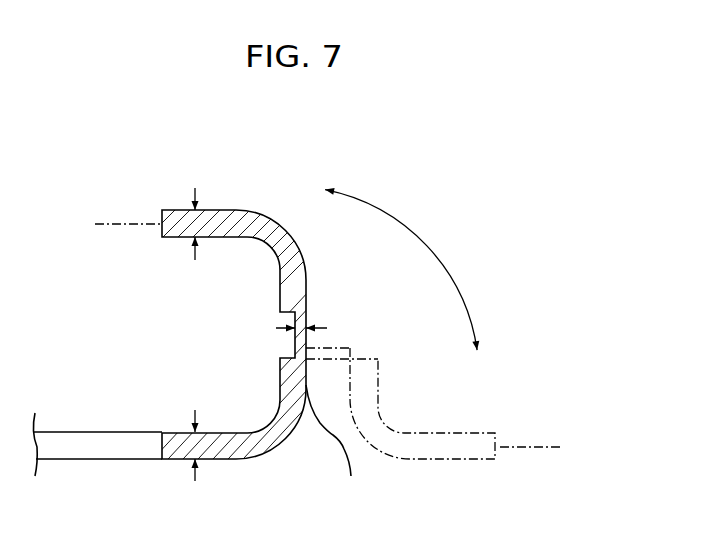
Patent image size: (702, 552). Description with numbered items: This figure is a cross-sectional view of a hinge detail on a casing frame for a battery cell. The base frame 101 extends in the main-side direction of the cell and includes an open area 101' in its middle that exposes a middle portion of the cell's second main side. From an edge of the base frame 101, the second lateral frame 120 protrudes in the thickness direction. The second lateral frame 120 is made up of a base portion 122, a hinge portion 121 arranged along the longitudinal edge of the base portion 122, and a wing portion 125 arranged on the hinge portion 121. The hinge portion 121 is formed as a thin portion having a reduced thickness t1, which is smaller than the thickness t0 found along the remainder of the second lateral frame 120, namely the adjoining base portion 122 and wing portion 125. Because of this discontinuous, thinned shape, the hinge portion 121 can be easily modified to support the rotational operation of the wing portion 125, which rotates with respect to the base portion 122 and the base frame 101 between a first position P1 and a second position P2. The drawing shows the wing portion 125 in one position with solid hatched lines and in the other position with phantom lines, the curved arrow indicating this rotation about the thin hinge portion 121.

The second lateral frame 120 is at (278, 182).
The wing portion 125 is at (242, 221).
The hinge portion 121 is at (300, 346).
The base portion 122 is at (332, 443).
The base frame 101 is at (207, 472).
The open area 101' is at (97, 461).
The first position P1 is at (546, 449).
The second position P2 is at (114, 224).
The thickness t0 is at (195, 325).
The reduced thickness t1 is at (304, 320).